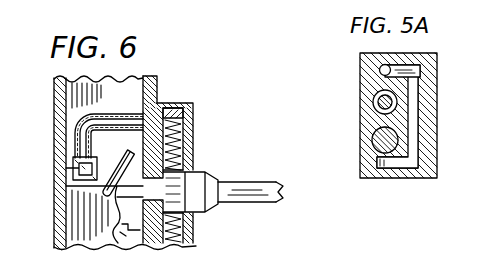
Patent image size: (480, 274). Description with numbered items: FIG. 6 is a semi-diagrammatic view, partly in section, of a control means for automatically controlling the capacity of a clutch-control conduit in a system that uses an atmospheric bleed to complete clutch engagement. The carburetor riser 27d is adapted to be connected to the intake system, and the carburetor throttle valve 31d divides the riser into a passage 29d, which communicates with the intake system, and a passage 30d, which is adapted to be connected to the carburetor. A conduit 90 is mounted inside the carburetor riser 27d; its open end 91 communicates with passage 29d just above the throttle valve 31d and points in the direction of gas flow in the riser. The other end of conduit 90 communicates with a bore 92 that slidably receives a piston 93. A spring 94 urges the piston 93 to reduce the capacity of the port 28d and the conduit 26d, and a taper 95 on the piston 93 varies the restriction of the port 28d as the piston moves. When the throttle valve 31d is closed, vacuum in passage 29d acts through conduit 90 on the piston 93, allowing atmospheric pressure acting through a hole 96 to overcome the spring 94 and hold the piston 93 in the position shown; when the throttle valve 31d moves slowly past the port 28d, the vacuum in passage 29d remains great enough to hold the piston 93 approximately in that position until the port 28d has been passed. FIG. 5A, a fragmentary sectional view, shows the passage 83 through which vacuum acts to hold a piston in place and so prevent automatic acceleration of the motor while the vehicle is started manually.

In FIG. 6, the conduit 26d is at (283, 195).
In FIG. 6, the carburetor riser 27d is at (152, 76).
In FIG. 6, the port 28d is at (215, 213).
In FIG. 6, the passage 29d is at (150, 98).
In FIG. 6, the passage 30d is at (170, 246).
In FIG. 6, the carburetor throttle valve 31d is at (118, 242).
In FIG. 5A, the passage 83 is at (420, 74).
In FIG. 6, the conduit 90 is at (66, 131).
In FIG. 6, the open end 91 is at (73, 168).
In FIG. 6, the bore 92 is at (140, 229).
In FIG. 6, the piston 93 is at (195, 156).
In FIG. 6, the spring 94 is at (195, 128).
In FIG. 6, the taper 95 is at (208, 172).
In FIG. 6, the hole 96 is at (192, 246).